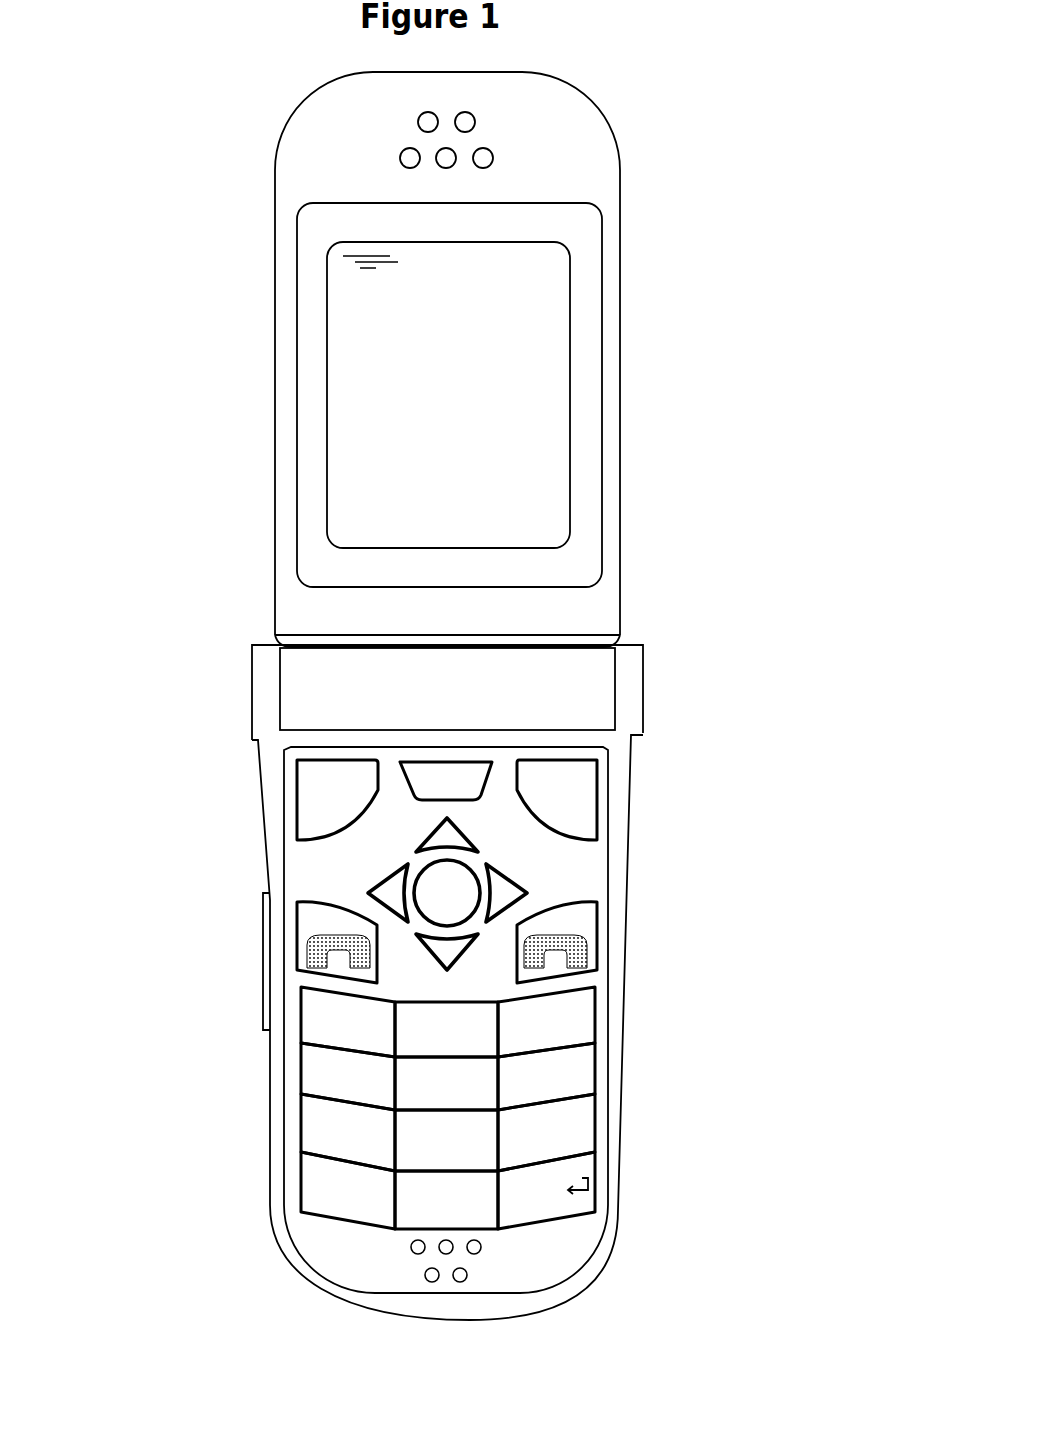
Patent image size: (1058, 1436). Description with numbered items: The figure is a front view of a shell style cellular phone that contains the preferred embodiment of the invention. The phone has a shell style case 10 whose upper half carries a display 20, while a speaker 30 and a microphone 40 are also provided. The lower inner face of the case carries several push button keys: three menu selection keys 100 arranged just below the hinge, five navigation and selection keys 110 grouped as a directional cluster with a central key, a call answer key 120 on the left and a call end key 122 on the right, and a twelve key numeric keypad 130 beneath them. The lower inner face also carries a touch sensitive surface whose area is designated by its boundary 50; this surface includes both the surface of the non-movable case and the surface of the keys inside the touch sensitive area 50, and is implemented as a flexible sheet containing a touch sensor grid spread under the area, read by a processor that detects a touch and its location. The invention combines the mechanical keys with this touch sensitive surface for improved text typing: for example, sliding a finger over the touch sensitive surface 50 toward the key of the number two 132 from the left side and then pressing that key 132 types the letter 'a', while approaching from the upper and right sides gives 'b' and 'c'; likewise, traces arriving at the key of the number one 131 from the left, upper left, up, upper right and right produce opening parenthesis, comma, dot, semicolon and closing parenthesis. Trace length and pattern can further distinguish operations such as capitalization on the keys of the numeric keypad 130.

The shell style case 10 is at (274, 438).
The display 20 is at (327, 330).
The speaker 30 is at (417, 1268).
The microphone 40 is at (400, 137).
The touch sensitive area boundary 50 is at (612, 745).
The menu selection keys 100 is at (432, 755).
The navigation & selection keys 110 is at (455, 888).
The call answer key 120 is at (318, 896).
The call end key 122 is at (563, 896).
The numeric keypad 130 is at (479, 1104).
The key of the number '1' 131 is at (316, 1000).
The key of the number '2' 132 is at (488, 1008).